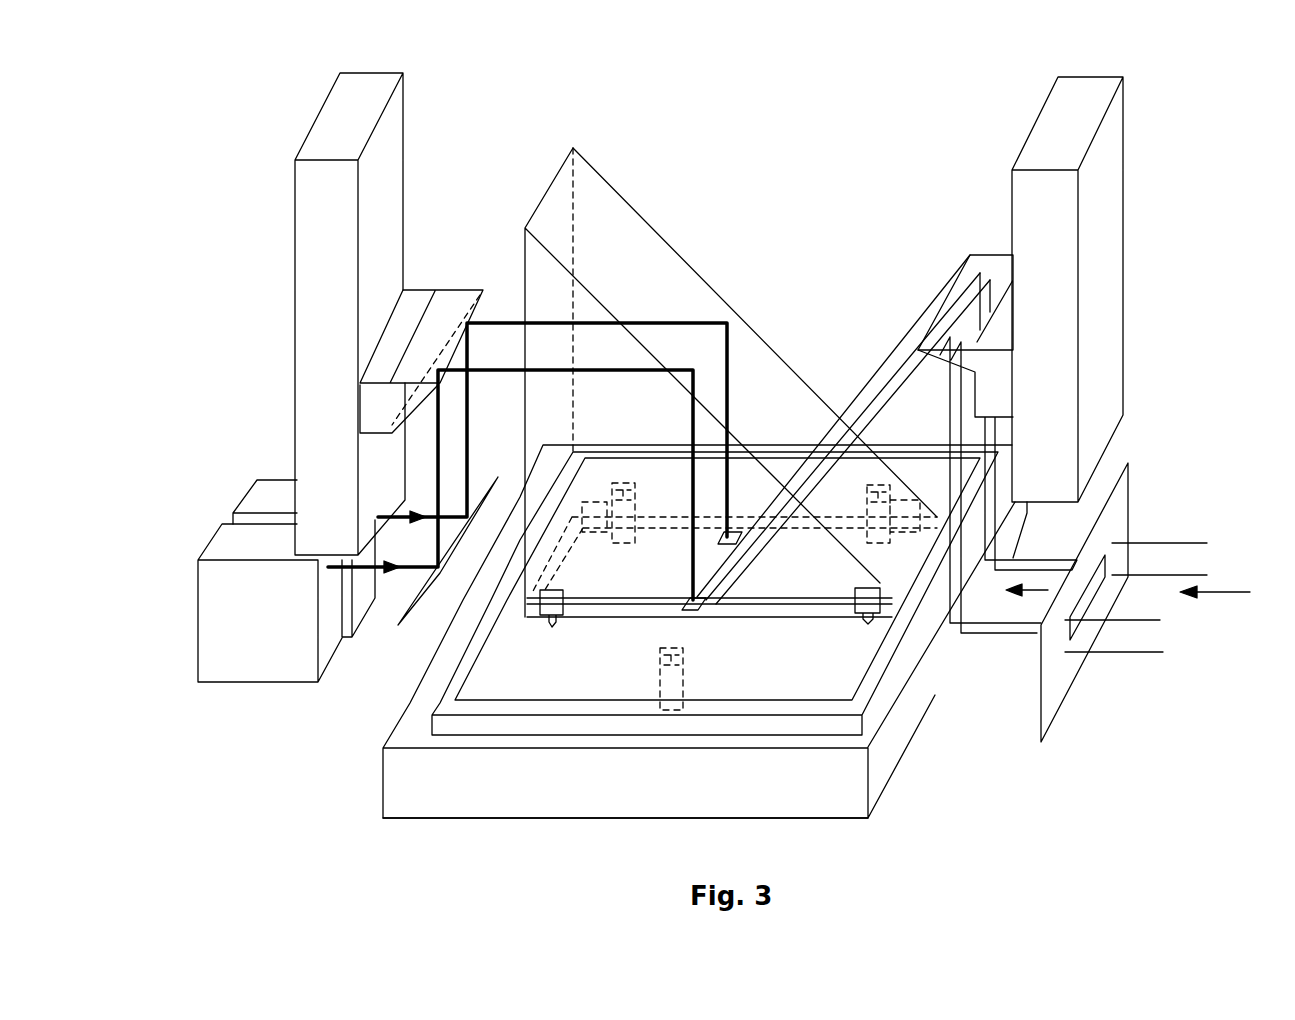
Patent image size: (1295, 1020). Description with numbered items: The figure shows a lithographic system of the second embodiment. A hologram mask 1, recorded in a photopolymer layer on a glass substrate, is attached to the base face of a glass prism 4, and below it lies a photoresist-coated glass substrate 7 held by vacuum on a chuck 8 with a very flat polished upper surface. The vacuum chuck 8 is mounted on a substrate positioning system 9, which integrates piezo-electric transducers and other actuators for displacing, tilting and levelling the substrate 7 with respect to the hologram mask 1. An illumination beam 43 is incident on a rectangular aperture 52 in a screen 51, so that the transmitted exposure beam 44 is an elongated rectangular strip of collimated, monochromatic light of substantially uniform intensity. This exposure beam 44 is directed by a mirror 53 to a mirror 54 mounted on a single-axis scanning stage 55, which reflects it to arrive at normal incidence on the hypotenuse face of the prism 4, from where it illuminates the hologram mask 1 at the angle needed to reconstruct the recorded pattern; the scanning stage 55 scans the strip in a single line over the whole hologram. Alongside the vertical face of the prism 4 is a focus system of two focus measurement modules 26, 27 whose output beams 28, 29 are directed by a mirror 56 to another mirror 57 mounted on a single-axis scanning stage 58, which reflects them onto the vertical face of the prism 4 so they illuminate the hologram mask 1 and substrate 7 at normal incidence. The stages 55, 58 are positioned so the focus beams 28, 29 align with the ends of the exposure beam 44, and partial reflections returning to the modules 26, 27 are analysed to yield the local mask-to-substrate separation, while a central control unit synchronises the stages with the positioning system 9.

The hologram mask 1 is at (885, 608).
The glass prism 4 is at (640, 225).
The glass substrate 7 is at (475, 689).
The vacuum chuck 8 is at (440, 728).
The substrate positioning system 9 is at (770, 805).
The focus measurement module 26 is at (200, 548).
The focus measurement module 27 is at (236, 486).
The focus beam 28 is at (397, 574).
The focus beam 29 is at (410, 515).
The illumination beam 43 is at (1230, 596).
The exposure beam 44 is at (1030, 592).
The screen 51 is at (1052, 712).
The rectangular aperture 52 is at (1105, 567).
The mirror 53 is at (945, 645).
The mirror 54 is at (975, 258).
The single-axis scanning stage 55 is at (1122, 292).
The mirror 56 is at (497, 477).
The mirror 57 is at (455, 296).
The single-axis scanning stage 58 is at (300, 277).